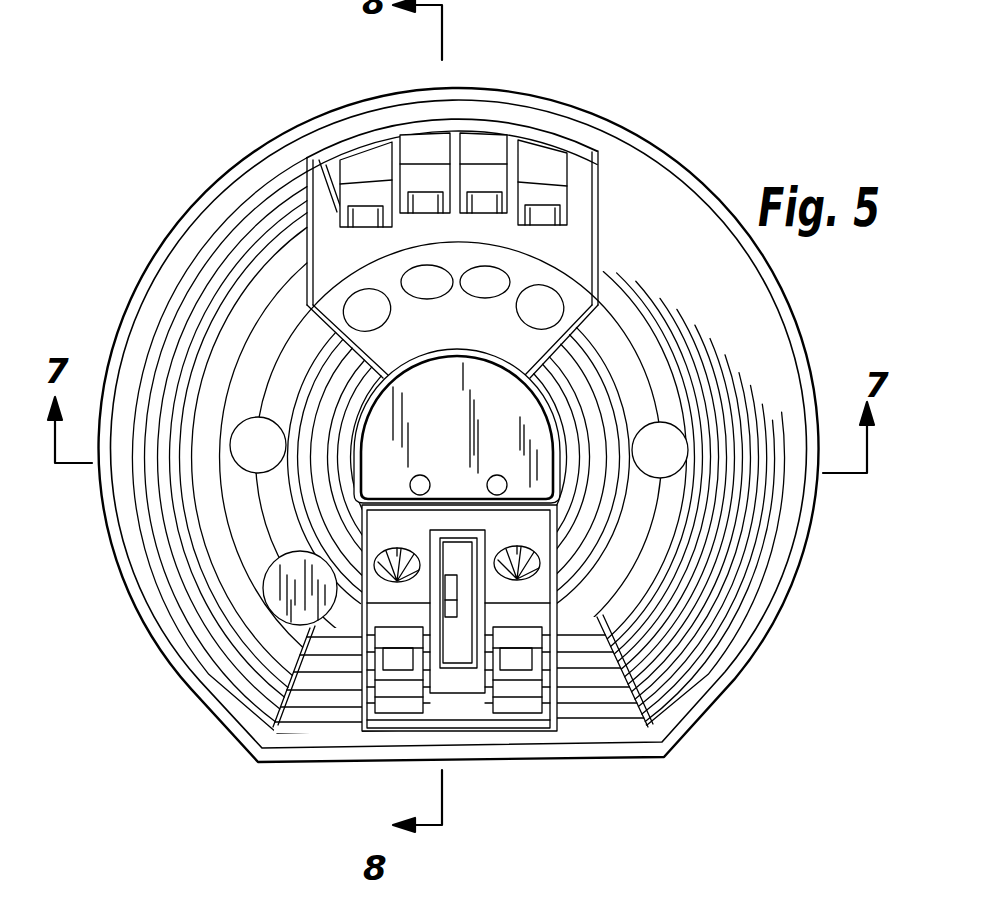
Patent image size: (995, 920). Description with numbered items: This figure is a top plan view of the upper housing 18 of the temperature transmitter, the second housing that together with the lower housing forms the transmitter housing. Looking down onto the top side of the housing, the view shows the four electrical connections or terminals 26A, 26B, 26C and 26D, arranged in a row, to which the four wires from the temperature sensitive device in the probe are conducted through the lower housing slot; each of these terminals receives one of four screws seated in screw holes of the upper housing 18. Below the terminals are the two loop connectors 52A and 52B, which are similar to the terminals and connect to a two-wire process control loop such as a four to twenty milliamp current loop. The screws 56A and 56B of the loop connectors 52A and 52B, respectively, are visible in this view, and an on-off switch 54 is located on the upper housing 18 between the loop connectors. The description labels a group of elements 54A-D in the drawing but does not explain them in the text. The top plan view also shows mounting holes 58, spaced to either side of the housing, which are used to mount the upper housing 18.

The upper housing 18 is at (133, 295).
The electrical connection 26A is at (540, 166).
The electrical connection 26B is at (472, 142).
The electrical connection 26C is at (419, 147).
The electrical connection 26D is at (360, 165).
The loop connector 52A is at (518, 657).
The loop connector 52B is at (398, 656).
The on-off switch 54 is at (456, 555).
The indicator lights 54A-D is at (533, 325).
The screw 56A is at (540, 553).
The screw 56B is at (383, 556).
The mounting holes 58 is at (271, 460).